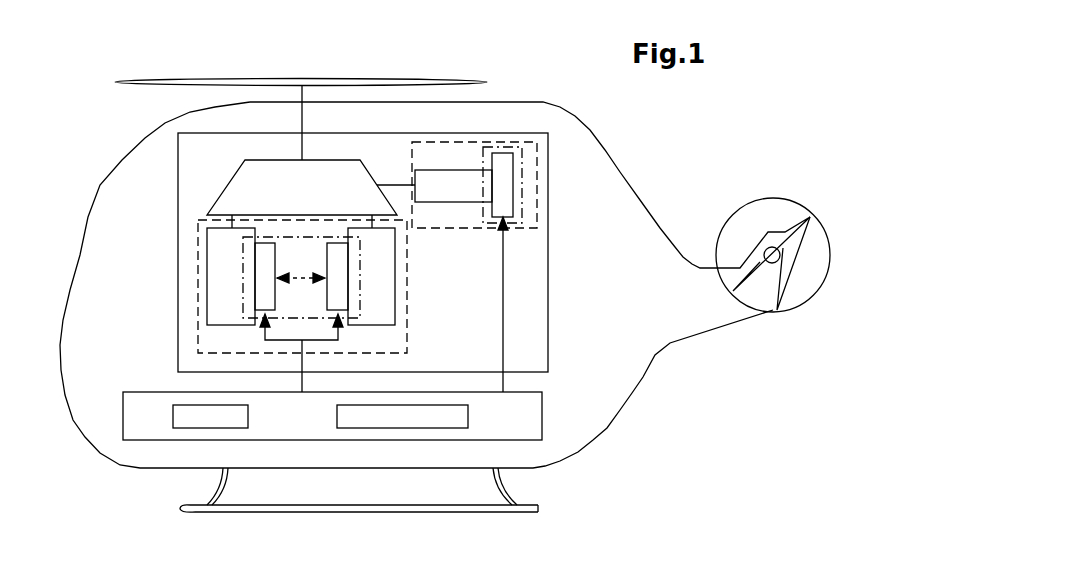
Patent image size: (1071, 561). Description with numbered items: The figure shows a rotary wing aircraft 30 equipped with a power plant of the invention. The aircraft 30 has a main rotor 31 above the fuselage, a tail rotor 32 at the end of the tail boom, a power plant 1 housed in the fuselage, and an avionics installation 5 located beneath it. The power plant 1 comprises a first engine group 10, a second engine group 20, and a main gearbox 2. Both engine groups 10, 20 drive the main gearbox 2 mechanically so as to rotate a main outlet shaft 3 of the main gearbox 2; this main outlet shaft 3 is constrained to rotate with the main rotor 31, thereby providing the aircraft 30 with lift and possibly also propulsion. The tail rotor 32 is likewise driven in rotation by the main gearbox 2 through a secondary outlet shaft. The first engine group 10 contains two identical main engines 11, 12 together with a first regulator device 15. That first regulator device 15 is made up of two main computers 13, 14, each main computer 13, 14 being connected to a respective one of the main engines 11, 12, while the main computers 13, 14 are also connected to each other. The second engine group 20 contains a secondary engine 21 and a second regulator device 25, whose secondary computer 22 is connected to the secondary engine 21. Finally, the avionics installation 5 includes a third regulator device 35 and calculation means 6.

The power plant 1 is at (548, 310).
The main gearbox 2 is at (228, 183).
The main outlet shaft 3 is at (300, 145).
The avionics installation 5 is at (542, 410).
The calculation means 6 is at (173, 415).
The first engine group 10 is at (198, 305).
The main engine 11 is at (227, 325).
The main engine 12 is at (365, 327).
The main computer 13 is at (275, 298).
The main computer 14 is at (347, 293).
The first regulator device 15 is at (348, 280).
The second engine group 20 is at (537, 190).
The secondary engine 21 is at (445, 202).
The secondary computer 22 is at (513, 158).
The second regulator device 25 is at (522, 213).
The rotary wing aircraft 30 is at (735, 402).
The main rotor 31 is at (438, 77).
The tail rotor 32 is at (805, 205).
The third regulator device 35 is at (337, 413).